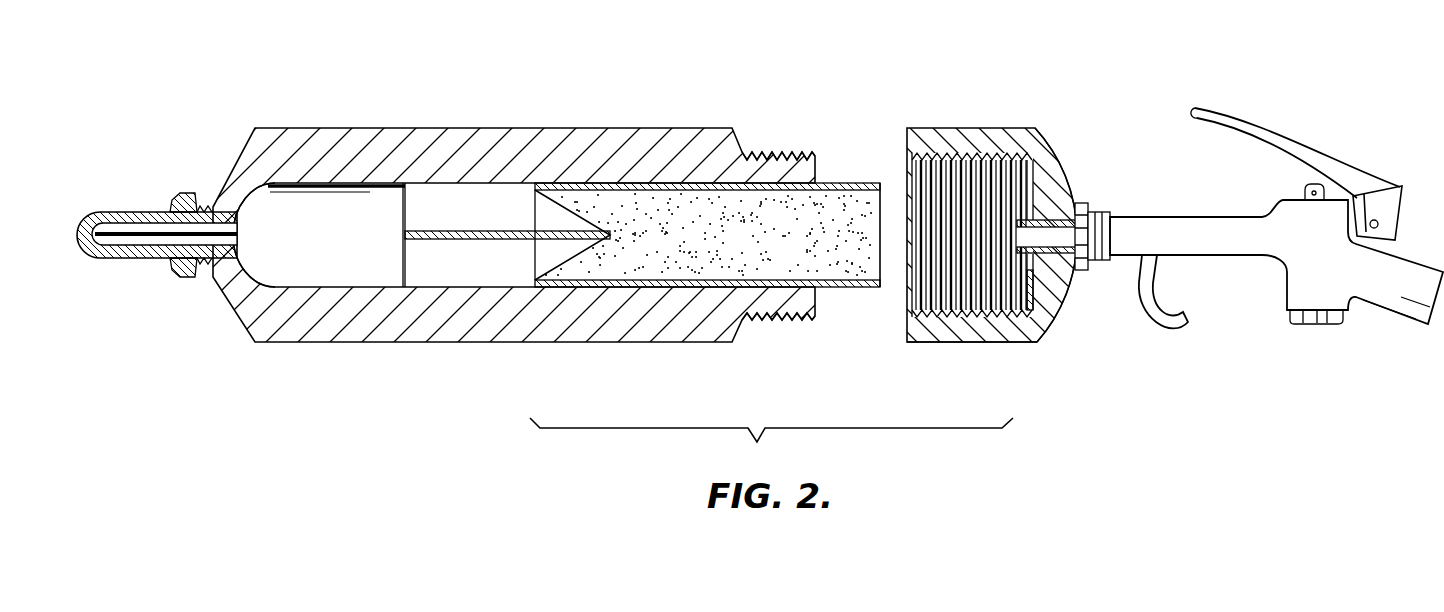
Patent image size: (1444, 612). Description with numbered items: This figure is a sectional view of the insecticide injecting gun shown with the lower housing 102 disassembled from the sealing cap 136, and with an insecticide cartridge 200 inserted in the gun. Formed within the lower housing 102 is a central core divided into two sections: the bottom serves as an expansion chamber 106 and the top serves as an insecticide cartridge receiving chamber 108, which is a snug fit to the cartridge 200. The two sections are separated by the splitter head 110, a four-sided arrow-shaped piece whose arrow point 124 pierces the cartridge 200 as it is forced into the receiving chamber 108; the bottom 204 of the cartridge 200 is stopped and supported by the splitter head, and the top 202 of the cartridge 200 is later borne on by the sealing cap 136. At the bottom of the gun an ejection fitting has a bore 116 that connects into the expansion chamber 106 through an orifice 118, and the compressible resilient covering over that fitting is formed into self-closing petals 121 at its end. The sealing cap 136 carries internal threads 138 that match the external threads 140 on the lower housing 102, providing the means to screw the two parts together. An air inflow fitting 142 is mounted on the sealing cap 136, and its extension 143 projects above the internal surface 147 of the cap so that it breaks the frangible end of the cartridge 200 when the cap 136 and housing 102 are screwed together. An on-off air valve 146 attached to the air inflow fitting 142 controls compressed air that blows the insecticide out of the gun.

The lower housing 102 is at (616, 128).
The expansion chamber 106 is at (378, 200).
The insecticide cartridge receiving chamber 108 is at (832, 270).
The splitter head 110 is at (507, 203).
The bore 116 is at (212, 206).
The orifice 118 is at (238, 202).
The self closing petals 121 is at (97, 212).
The point of the arrow 124 is at (612, 233).
The sealing cap 136 is at (1032, 195).
The internal threads 138 is at (968, 157).
The external threads 140 is at (782, 152).
The air inflow fitting 142 is at (1097, 207).
The extension 143 is at (1027, 275).
The on-off air valve 146 is at (1195, 216).
The internal surface 147 is at (996, 317).
The insecticide cartridge 200 is at (731, 182).
The top of insecticide cartridge 202 is at (878, 184).
The bottom of the cartridge 204 is at (535, 288).